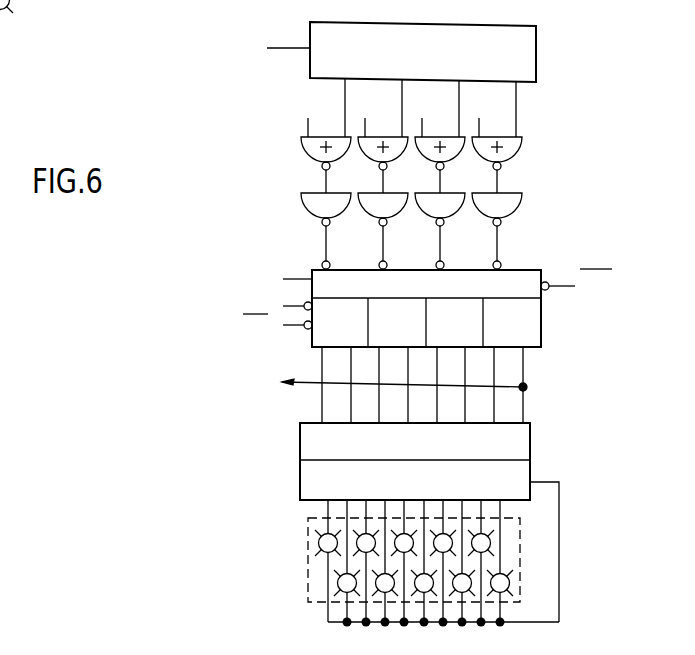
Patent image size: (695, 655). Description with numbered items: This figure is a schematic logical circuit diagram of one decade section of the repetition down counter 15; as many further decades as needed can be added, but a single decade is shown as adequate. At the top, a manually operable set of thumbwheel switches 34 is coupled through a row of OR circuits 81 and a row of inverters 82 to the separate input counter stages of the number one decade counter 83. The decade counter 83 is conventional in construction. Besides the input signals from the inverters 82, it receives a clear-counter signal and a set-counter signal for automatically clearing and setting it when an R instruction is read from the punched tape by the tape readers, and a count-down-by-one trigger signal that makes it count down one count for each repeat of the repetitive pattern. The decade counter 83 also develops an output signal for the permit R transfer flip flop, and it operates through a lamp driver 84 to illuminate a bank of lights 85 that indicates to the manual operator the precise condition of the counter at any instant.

The repetition down counter 15 is at (248, 158).
The thumbwheel switches 34 is at (536, 38).
The OR circuits 81 is at (520, 152).
The inverters 82 is at (520, 212).
The decade counter 83 is at (533, 271).
The lamp driver 84 is at (532, 447).
The bank of lights 85 is at (308, 540).